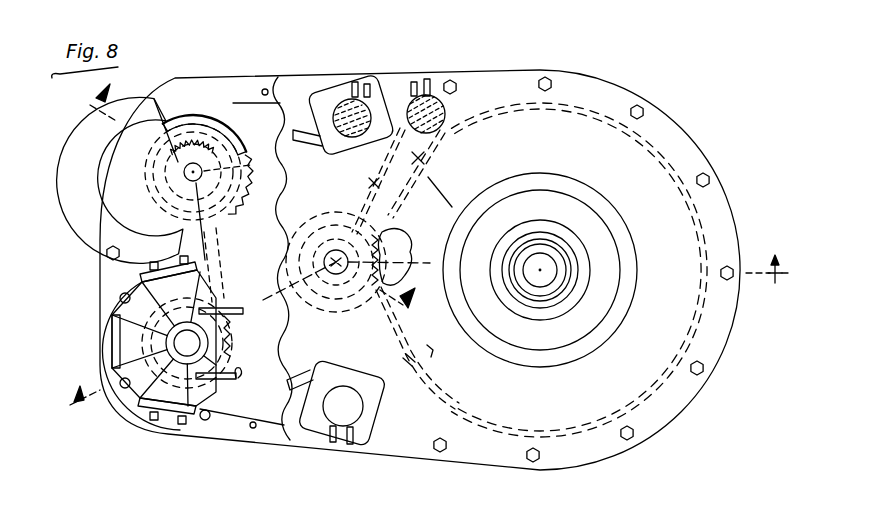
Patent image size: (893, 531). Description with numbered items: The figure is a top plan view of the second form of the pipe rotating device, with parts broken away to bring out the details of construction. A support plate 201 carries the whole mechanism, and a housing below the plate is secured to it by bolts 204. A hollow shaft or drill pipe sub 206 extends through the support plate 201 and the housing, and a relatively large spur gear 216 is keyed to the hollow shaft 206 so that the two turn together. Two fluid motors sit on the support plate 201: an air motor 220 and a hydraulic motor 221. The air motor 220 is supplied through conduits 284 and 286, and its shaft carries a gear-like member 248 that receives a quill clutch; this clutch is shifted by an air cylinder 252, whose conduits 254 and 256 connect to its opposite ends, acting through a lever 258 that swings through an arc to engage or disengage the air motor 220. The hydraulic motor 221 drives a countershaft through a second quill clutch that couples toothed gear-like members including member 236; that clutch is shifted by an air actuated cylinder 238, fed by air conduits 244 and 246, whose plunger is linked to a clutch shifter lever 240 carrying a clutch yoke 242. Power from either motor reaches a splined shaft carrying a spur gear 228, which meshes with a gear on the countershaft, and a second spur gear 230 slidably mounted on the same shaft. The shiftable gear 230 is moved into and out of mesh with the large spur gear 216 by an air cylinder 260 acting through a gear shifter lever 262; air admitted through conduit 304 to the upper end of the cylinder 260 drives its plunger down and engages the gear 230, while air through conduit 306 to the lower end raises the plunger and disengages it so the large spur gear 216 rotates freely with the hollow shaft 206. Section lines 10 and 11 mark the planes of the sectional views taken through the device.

The section line 10- 10 is at (425, 328).
The section line 11- 11 is at (256, 197).
The support plate 201 is at (480, 455).
The bolts 204 is at (110, 250).
The hollow shaft 206 is at (560, 284).
The large spur gear 216 is at (453, 403).
The air motor 220 is at (130, 330).
The hydraulic motor 221 is at (143, 173).
The spur gear 228 is at (433, 358).
The shiftable spur gear 230 is at (309, 297).
The toothed gear-like member 236 is at (188, 148).
The air actuated cylinder 238 is at (357, 137).
The clutch shifter lever 240 is at (300, 141).
The clutch yoke 242 is at (229, 124).
The air conduit 244 is at (355, 82).
The air conduit 246 is at (367, 84).
The gear-like member 248 is at (231, 333).
The air cylinder 252 is at (355, 400).
The air conduit 254 is at (333, 441).
The air conduit 256 is at (350, 444).
The lever 258 is at (305, 368).
The air cylinder 260 is at (448, 112).
The gear shifter lever 262 is at (430, 160).
The conduit 284 is at (240, 307).
The conduit 286 is at (214, 381).
The conduit 304 is at (414, 81).
The conduit 306 is at (428, 78).